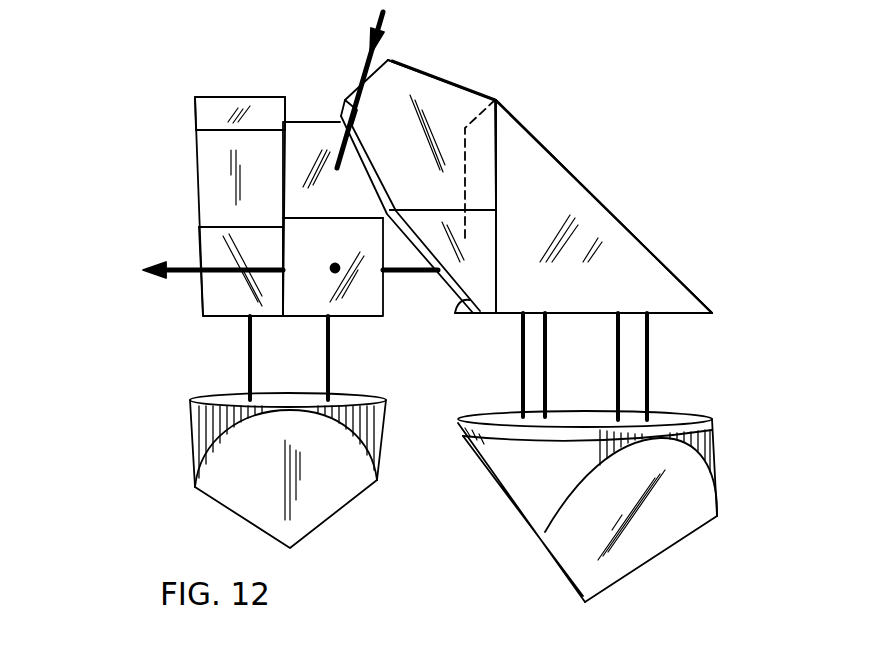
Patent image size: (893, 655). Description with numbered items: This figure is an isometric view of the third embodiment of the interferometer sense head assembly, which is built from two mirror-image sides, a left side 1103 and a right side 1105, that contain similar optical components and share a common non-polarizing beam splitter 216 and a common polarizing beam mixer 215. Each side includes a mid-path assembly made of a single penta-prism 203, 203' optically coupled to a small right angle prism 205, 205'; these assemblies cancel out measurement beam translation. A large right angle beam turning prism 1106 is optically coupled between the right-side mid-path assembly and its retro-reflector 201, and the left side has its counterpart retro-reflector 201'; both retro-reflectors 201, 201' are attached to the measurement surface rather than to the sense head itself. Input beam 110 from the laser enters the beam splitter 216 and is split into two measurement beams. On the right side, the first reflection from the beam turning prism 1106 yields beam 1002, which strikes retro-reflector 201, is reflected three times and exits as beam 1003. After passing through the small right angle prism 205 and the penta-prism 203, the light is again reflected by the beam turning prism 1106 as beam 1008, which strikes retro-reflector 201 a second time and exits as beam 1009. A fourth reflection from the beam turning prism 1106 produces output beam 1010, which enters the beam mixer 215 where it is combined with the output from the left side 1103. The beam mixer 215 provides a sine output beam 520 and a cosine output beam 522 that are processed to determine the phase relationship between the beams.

The left side 1103 is at (238, 56).
The input beam 110 is at (366, 70).
The penta-prism 203 is at (466, 157).
The penta-prism 203' is at (188, 118).
The small right angle prism 205 is at (599, 206).
The small right angle prism 205' is at (187, 259).
The right side 1105 is at (612, 134).
The large right angle beam turning prism 1106 is at (632, 232).
The non-polarizing beam splitter 216 is at (350, 207).
The polarizing beam mixer 215 is at (335, 247).
The sine output beam 520 is at (181, 278).
The cosine output beam 522 is at (335, 272).
The output beam 1010 is at (436, 273).
The beam 1008 is at (545, 345).
The beam 1002 is at (523, 383).
The beam 1009 is at (618, 343).
The beam 1003 is at (648, 383).
The retro-reflector 201 is at (588, 506).
The retro-reflector 201' is at (288, 444).